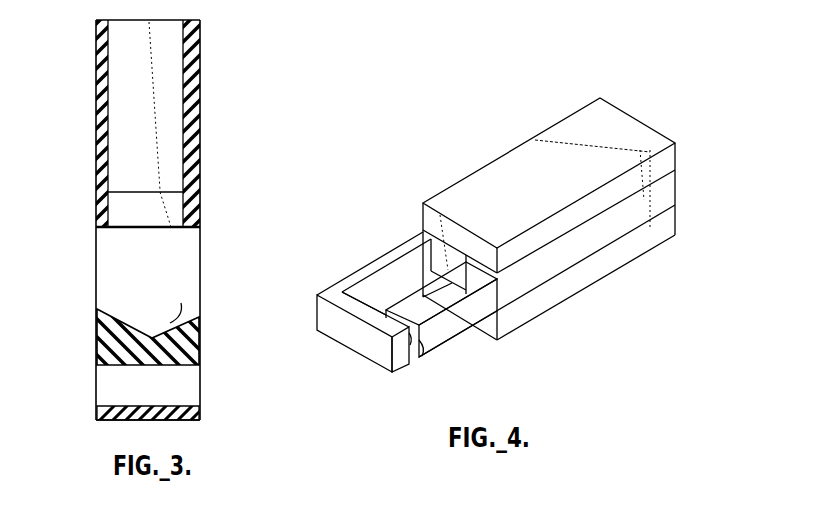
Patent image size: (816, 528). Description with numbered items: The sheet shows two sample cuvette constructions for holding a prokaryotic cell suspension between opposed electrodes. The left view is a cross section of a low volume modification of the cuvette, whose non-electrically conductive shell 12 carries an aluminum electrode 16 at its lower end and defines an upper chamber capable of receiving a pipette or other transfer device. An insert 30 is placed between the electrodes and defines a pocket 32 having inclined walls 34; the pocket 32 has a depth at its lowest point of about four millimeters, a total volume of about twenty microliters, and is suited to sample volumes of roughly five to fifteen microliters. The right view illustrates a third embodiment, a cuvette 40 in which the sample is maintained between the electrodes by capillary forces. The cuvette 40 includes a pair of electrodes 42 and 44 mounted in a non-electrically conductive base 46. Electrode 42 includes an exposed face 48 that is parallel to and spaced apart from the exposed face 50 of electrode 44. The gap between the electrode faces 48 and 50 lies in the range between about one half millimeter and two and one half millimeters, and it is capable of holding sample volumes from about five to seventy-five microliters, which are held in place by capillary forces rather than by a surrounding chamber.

In FIG. 3, the shell 12 is at (200, 108).
In FIG. 3, the electrode 16 is at (187, 253).
In FIG. 3, the insert 30 is at (187, 337).
In FIG. 3, the pocket 32 is at (128, 300).
In FIG. 3, the inclined walls 34 is at (133, 331).
In FIG. 4, the cuvette 40 is at (515, 239).
In FIG. 4, the electrode 42 is at (365, 342).
In FIG. 4, the electrode 44 is at (440, 330).
In FIG. 4, the base 46 is at (547, 304).
In FIG. 4, the exposed face 48 is at (414, 345).
In FIG. 4, the exposed face 50 is at (422, 343).